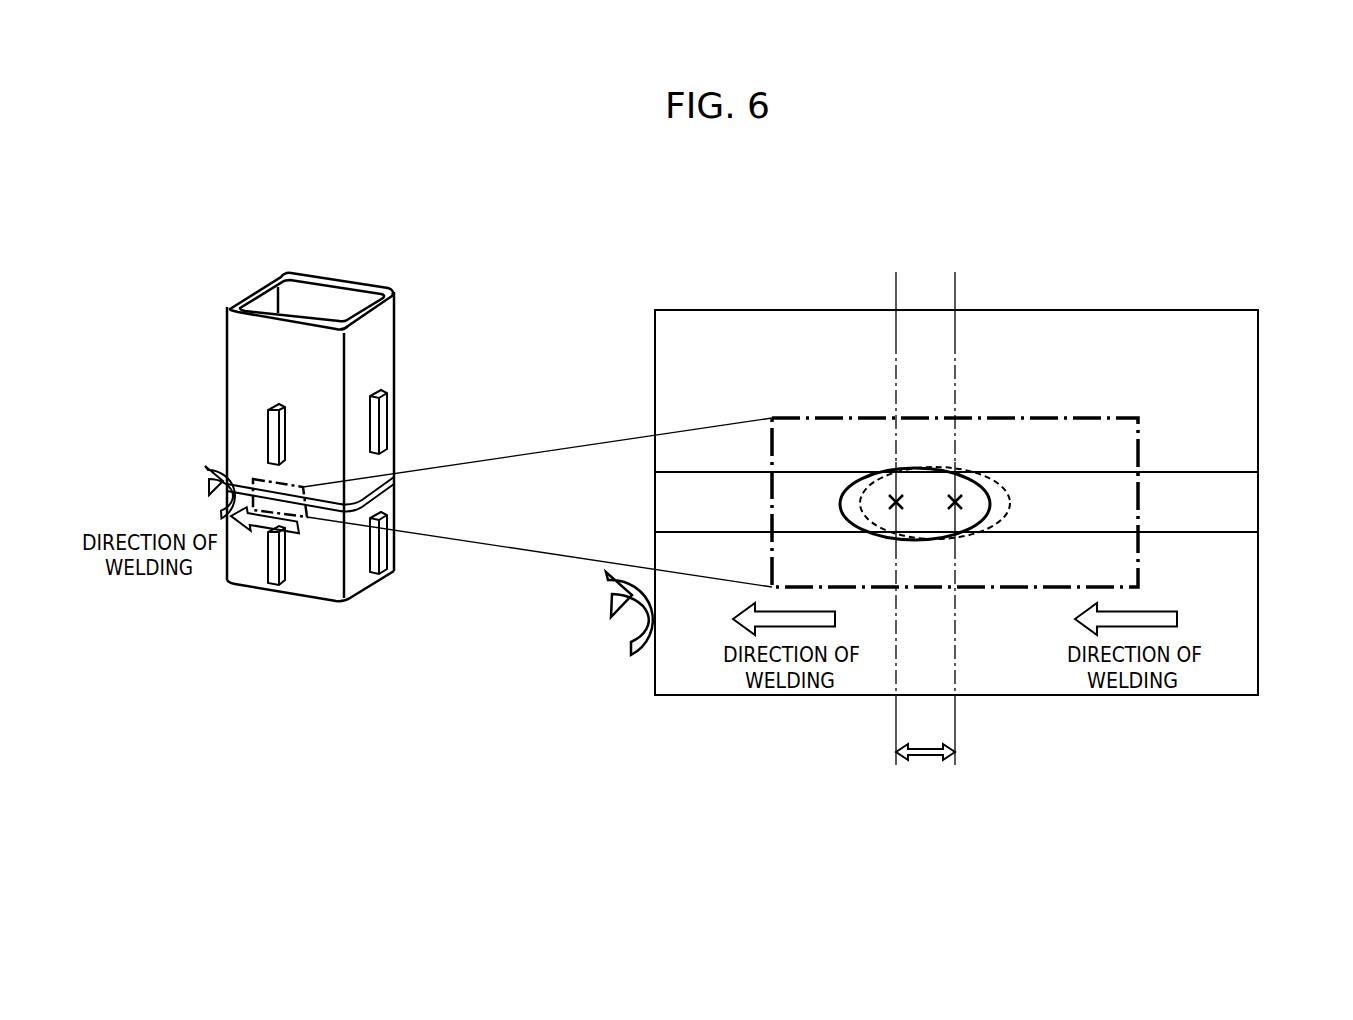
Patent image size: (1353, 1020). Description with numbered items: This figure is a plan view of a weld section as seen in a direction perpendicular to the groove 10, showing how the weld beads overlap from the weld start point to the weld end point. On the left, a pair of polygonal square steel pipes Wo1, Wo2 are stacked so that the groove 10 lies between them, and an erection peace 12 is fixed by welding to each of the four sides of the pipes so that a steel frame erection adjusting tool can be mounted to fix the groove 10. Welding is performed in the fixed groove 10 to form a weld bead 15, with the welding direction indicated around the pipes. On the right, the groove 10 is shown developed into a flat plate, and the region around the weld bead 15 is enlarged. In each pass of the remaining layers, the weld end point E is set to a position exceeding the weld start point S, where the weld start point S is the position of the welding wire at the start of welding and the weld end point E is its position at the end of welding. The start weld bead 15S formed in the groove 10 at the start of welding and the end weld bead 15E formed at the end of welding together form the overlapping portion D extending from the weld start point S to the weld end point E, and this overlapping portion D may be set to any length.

The groove 10 is at (1243, 503).
The erection peace 12 is at (384, 422).
The weld bead 15 is at (270, 489).
The end weld bead 15E is at (840, 505).
The start weld bead 15S is at (1012, 502).
The weld end point E is at (886, 502).
The weld start point S is at (963, 502).
The overlapping portion D is at (925, 769).
The square steel pipe Wo1 is at (343, 300).
The square steel pipe Wo2 is at (319, 577).